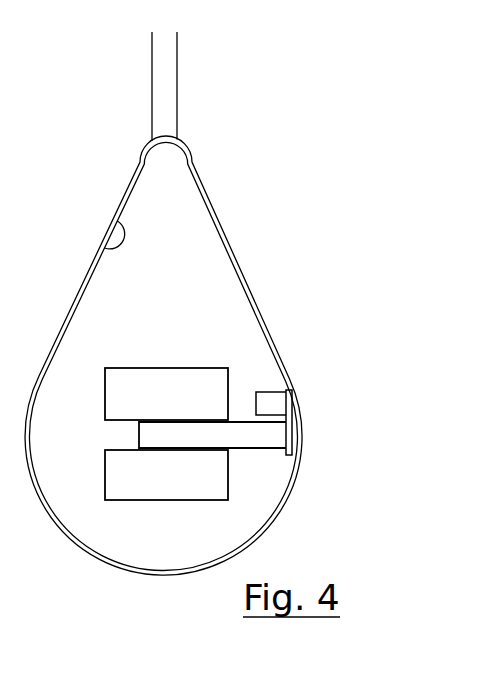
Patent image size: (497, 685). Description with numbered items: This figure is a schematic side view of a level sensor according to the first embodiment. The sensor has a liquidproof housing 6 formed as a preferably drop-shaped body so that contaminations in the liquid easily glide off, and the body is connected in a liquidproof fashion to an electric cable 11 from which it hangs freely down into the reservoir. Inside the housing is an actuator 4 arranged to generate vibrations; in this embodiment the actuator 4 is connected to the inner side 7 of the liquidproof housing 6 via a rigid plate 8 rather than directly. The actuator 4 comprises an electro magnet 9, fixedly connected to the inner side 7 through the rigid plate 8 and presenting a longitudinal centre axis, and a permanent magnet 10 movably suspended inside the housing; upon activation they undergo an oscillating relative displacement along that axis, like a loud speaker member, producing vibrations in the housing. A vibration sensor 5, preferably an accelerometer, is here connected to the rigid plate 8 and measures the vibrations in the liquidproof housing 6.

The actuator 4 is at (231, 428).
The vibration sensor 5 is at (280, 405).
The liquidproof housing 6 is at (66, 316).
The inner side 7 is at (116, 227).
The rigid plate 8 is at (292, 430).
The electro magnet 9 is at (247, 443).
The permanent magnet 10 is at (165, 473).
The electric cable 11 is at (165, 73).